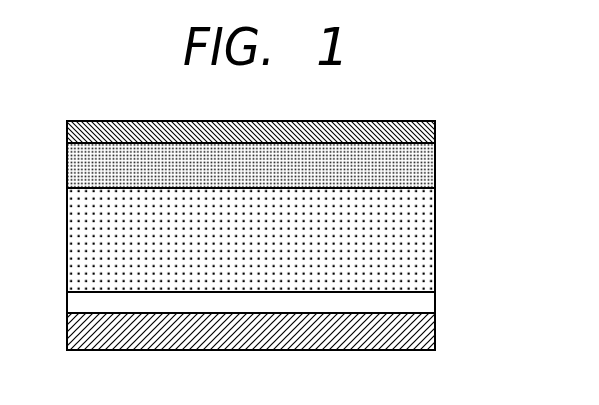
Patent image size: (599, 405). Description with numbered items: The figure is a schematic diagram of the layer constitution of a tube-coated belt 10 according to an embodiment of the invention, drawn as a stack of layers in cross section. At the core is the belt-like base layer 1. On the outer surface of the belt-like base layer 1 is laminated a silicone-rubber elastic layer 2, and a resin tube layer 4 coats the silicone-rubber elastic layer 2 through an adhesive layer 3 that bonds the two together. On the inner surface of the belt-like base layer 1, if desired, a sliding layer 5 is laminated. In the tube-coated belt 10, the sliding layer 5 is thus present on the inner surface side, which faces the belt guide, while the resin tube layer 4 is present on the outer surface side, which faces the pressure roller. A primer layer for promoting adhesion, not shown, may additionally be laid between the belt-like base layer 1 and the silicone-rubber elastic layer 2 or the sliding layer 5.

The tube-coated belt 10 is at (47, 121).
The sliding layer 5 is at (435, 125).
The belt-like base layer 1 is at (425, 166).
The silicone-rubber elastic layer 2 is at (425, 234).
The adhesive layer 3 is at (425, 302).
The resin tube layer 4 is at (430, 330).